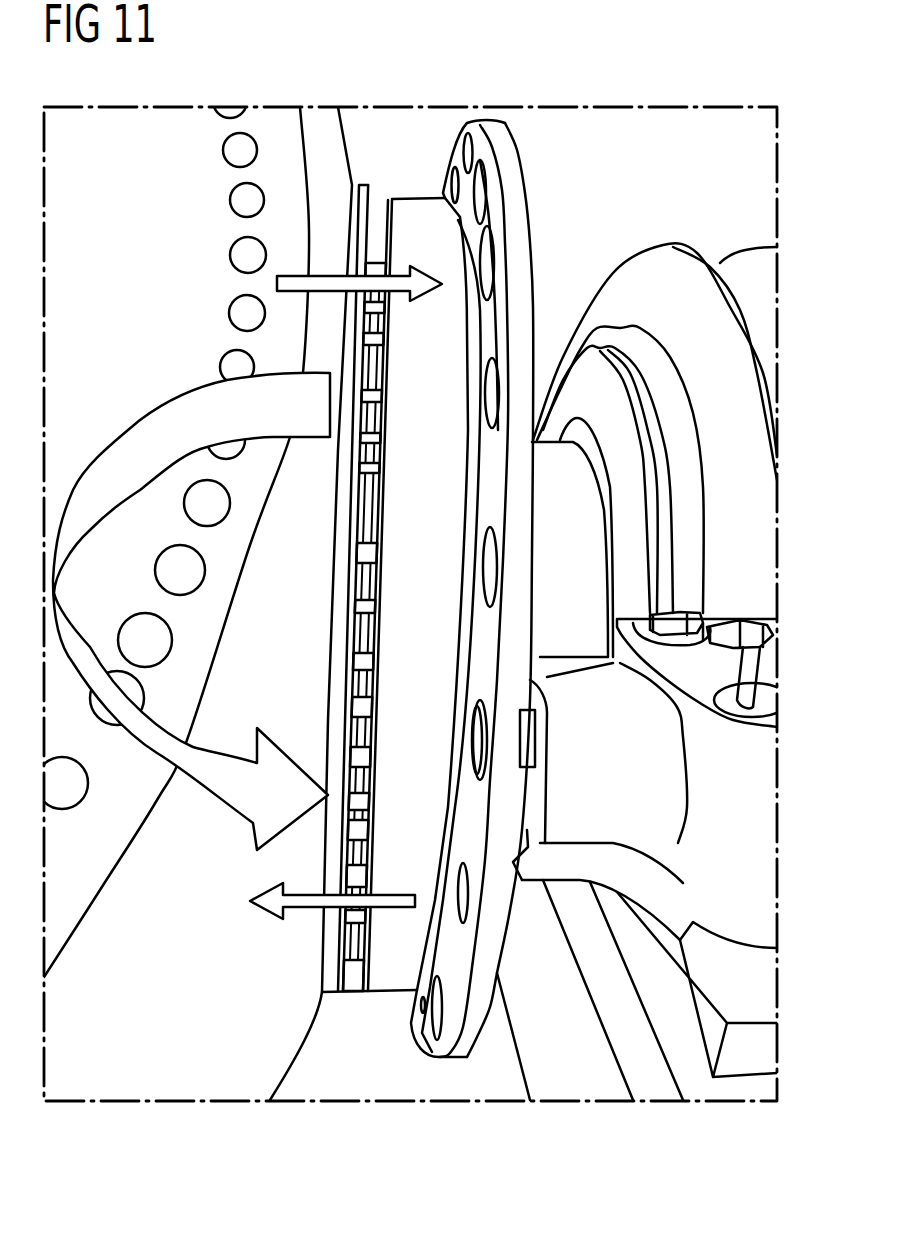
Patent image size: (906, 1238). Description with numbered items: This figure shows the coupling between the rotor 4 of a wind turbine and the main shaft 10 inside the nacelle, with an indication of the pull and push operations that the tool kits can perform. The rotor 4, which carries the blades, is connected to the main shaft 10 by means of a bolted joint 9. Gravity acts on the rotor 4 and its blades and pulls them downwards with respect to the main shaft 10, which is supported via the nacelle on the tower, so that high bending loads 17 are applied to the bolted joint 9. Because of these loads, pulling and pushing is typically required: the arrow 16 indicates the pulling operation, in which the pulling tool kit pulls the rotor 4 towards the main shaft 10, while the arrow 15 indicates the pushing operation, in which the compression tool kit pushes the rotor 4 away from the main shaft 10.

The rotor 4 is at (278, 112).
The bolted joint 9 is at (374, 184).
The main shaft 10 is at (558, 460).
The arrow 15 is at (313, 910).
The arrow 16 is at (321, 273).
The bending loads 17 is at (160, 408).